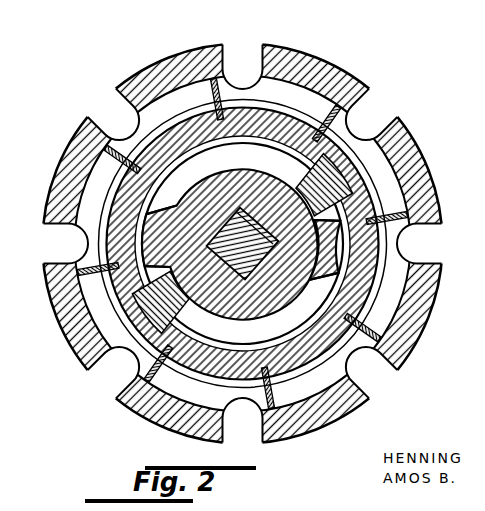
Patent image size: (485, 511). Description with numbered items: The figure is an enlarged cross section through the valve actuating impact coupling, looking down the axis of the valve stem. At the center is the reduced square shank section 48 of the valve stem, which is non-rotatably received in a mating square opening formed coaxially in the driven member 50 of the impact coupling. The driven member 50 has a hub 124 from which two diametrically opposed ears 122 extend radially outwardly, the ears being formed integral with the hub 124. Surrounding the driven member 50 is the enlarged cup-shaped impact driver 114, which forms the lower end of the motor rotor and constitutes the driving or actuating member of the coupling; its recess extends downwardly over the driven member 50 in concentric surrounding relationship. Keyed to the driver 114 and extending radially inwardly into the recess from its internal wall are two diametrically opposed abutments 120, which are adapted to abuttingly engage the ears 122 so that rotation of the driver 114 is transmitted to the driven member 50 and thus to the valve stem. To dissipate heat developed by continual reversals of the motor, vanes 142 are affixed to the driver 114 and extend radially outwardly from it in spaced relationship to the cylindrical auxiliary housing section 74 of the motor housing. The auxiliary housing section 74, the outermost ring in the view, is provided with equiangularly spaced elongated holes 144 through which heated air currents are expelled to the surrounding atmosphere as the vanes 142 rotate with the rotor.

The auxiliary housing section 74 is at (426, 163).
The elongated holes 144 is at (262, 48).
The impact driver 114 is at (273, 117).
The vanes 142 is at (214, 88).
The driven member 50 is at (228, 167).
The square shank section 48 is at (230, 300).
The ears 122 is at (160, 208).
The abutments 120 is at (304, 180).
The hub 124 is at (257, 313).